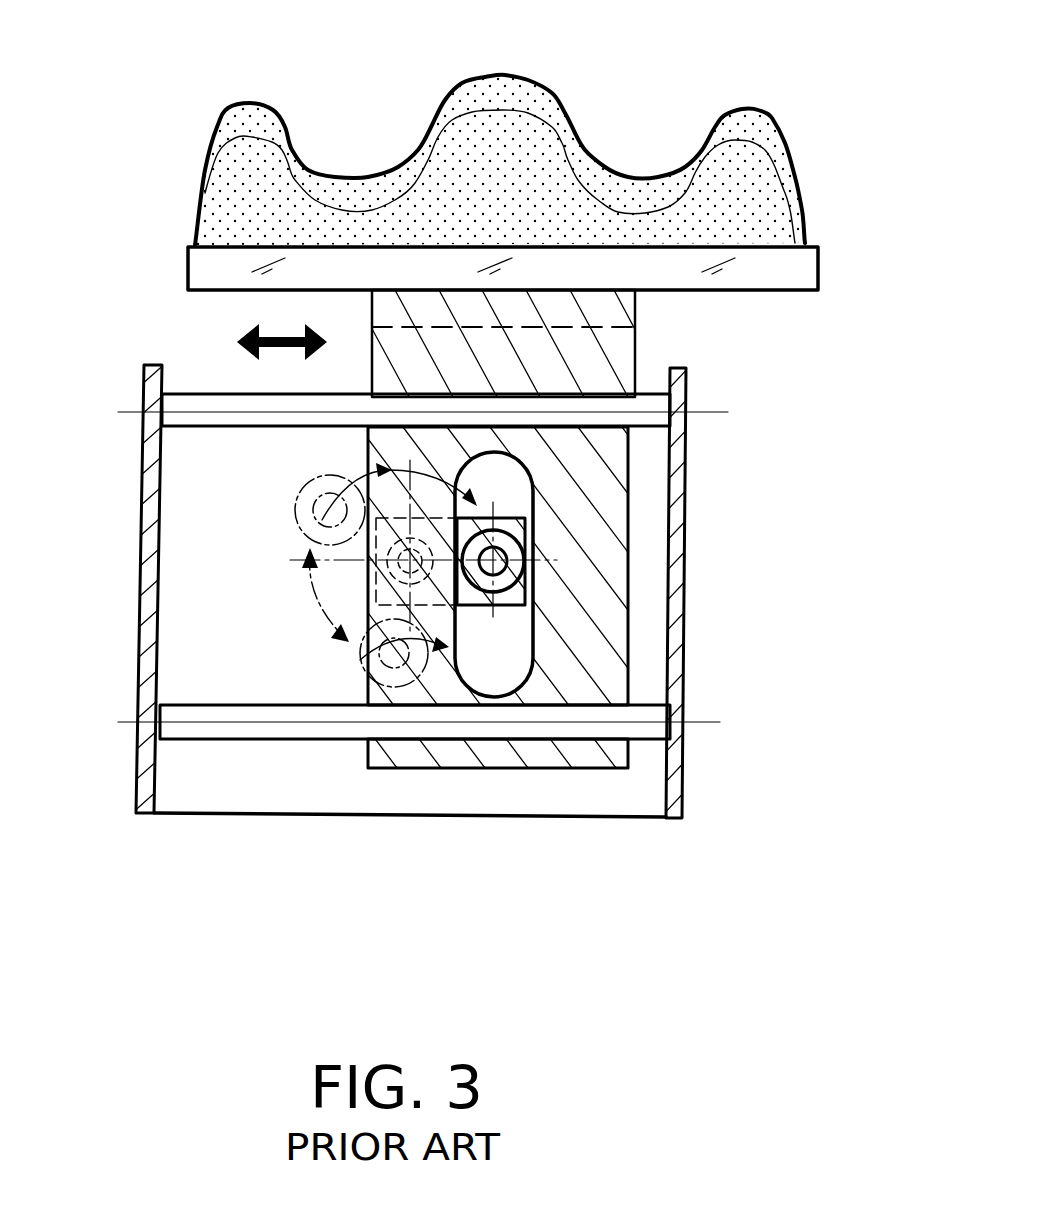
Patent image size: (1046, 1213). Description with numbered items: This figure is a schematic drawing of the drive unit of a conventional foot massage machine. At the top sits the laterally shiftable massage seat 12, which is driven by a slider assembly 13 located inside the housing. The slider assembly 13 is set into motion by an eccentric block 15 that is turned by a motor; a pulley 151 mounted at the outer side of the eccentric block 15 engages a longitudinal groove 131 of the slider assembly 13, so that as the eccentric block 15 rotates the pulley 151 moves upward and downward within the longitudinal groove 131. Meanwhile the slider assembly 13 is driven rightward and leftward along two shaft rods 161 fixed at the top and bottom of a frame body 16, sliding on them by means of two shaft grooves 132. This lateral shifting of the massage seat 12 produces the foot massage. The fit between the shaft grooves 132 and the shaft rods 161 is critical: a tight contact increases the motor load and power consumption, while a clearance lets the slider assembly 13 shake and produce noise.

The massage seat 12 is at (560, 143).
The shaft rods 161 is at (473, 413).
The shaft grooves 132 is at (563, 398).
The longitudinal groove 131 is at (500, 482).
The slider assembly 13 is at (585, 515).
The pulley 151 is at (512, 575).
The eccentric block 15 is at (463, 592).
The frame body 16 is at (147, 560).